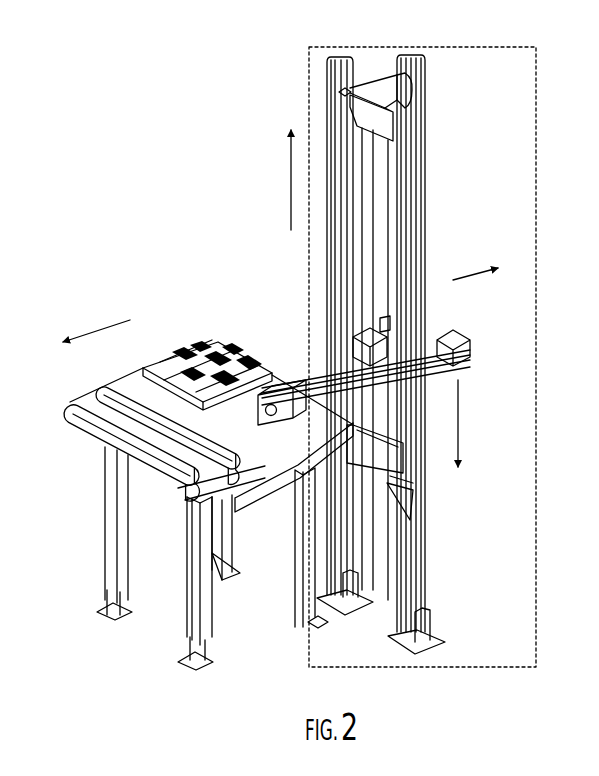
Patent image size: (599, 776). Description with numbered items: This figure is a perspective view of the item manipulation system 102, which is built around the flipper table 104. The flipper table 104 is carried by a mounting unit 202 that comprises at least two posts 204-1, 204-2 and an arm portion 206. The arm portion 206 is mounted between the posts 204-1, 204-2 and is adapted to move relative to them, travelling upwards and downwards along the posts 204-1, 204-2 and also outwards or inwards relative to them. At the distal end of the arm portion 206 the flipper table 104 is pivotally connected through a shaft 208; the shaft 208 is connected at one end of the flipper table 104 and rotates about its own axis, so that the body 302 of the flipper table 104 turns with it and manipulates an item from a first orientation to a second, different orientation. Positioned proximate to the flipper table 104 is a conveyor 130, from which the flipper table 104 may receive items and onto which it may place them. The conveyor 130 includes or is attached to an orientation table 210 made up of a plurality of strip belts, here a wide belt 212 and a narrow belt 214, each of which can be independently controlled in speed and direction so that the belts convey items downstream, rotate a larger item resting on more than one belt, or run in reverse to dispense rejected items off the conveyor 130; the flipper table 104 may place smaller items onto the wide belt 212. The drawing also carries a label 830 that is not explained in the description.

The item manipulation system 102 is at (148, 92).
The flipper table 104 is at (181, 358).
The conveyor 130 is at (75, 400).
The mounting unit 202 is at (538, 163).
The post 204-1 is at (352, 76).
The post 204-2 is at (408, 153).
The arm portion 206 is at (321, 377).
The shaft 208 is at (262, 378).
The orientation table 210 is at (90, 414).
The wide belt 212 is at (226, 484).
The narrow belt 214 is at (273, 494).
The body 302 is at (221, 343).
The conveyor belt 830 is at (102, 393).